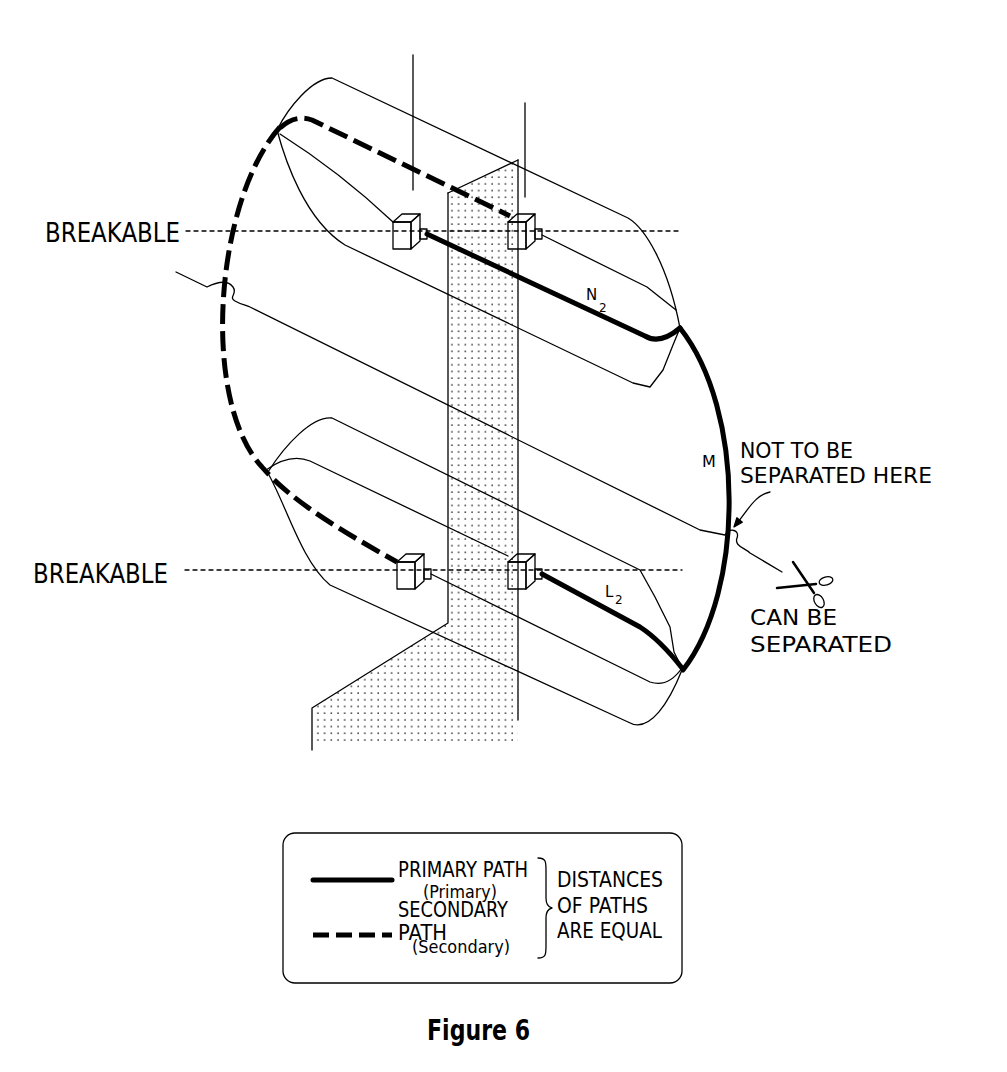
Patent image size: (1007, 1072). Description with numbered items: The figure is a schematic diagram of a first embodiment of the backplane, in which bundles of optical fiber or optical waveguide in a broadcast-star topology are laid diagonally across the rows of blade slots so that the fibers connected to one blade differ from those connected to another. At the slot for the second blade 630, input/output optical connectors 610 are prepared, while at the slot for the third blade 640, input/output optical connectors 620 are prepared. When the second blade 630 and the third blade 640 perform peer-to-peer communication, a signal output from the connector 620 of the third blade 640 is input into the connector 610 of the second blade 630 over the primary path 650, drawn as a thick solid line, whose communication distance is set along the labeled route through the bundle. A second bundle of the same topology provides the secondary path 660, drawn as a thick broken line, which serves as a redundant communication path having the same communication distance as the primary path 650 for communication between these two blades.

The optical connector 2 (OUT, IN) 610 is at (522, 214).
The optical connector 3 (OUT, IN) 620 is at (401, 251).
The blade 2 630 is at (418, 413).
The blade 3 640 is at (385, 109).
The primary path 650 is at (720, 646).
The secondary path 660 is at (234, 427).